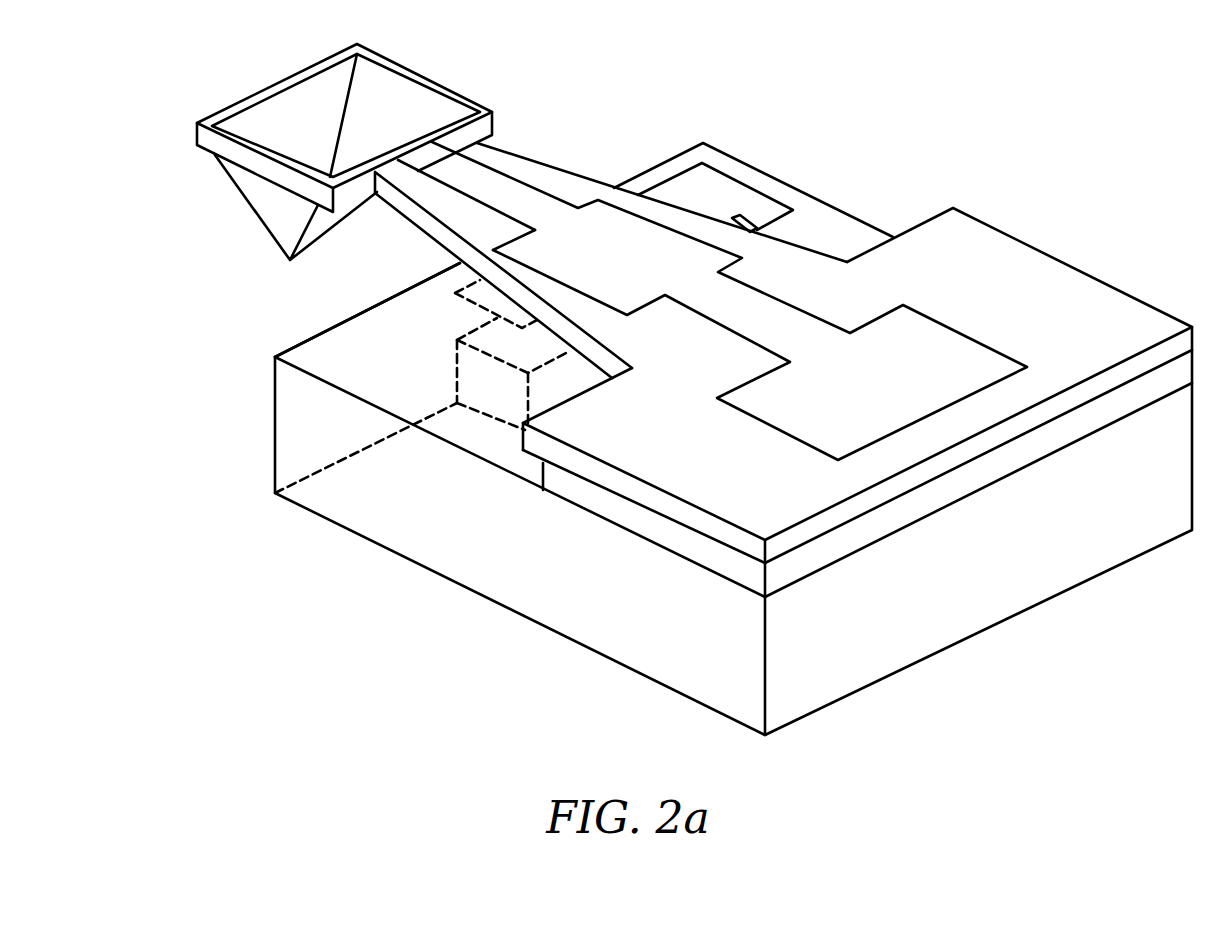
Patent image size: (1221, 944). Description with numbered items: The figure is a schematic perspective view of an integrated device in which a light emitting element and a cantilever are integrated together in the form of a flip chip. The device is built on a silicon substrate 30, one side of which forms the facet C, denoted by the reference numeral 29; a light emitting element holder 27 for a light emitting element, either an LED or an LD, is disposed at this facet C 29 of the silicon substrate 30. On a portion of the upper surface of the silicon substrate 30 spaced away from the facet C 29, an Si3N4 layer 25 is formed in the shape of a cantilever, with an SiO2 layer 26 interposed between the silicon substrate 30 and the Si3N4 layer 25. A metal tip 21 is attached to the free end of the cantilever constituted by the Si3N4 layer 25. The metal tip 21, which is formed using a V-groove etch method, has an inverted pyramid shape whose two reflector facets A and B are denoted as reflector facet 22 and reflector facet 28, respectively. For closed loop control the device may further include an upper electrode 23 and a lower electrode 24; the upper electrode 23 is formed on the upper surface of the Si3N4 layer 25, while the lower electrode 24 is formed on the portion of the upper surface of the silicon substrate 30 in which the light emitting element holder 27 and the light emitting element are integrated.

The metal tip 21 is at (232, 188).
The reflector facet A 22 is at (268, 120).
The upper electrode 23 is at (622, 218).
The lower electrode 24 is at (732, 192).
The Si3N4 layer 25 is at (725, 540).
The SiO2 layer 26 is at (658, 534).
The light emitting element holder 27 is at (473, 378).
The reflector facet B 28 is at (337, 233).
The facet C 29 is at (322, 321).
The silicon substrate 30 is at (372, 530).